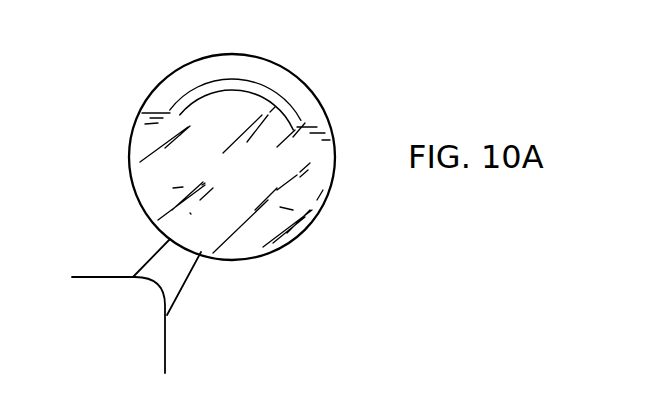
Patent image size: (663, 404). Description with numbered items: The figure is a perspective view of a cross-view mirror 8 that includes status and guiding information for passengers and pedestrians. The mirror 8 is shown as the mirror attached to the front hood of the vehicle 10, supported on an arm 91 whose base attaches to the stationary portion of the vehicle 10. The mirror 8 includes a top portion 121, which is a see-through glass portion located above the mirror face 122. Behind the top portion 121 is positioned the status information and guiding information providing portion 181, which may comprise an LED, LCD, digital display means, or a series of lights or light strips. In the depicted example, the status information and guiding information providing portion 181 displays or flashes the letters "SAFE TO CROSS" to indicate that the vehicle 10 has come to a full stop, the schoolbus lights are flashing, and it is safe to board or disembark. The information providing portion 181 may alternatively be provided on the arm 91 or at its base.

The cross-view mirror 8 is at (312, 232).
The vehicle 10 is at (170, 340).
The arm 91 is at (183, 288).
The top portion 121 is at (147, 128).
The mirror face 122 is at (157, 188).
The status information and guiding information providing portion 181 is at (297, 83).